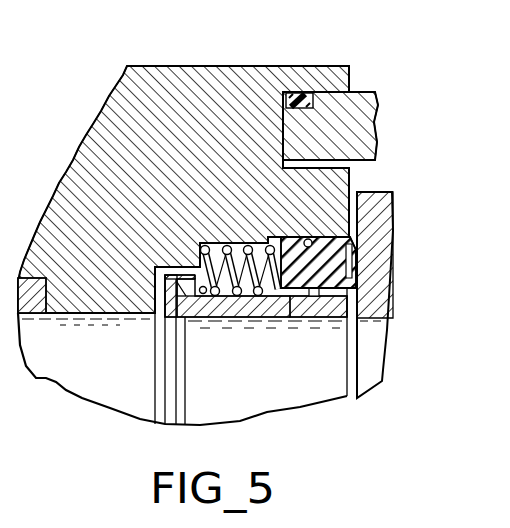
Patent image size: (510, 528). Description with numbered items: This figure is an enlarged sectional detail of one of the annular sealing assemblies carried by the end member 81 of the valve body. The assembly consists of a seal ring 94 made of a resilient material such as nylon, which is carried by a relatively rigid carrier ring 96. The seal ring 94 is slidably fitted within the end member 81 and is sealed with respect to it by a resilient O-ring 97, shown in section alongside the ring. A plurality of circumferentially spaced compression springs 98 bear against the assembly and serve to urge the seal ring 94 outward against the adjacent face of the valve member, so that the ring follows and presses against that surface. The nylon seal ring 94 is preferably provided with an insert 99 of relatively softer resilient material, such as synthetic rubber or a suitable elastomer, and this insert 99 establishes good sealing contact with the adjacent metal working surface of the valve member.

The end member 81 is at (184, 155).
The seal ring 94 is at (316, 293).
The carrier ring 96 is at (241, 317).
The O-ring 97 is at (308, 240).
The compression springs 98 is at (229, 247).
The insert 99 is at (350, 250).